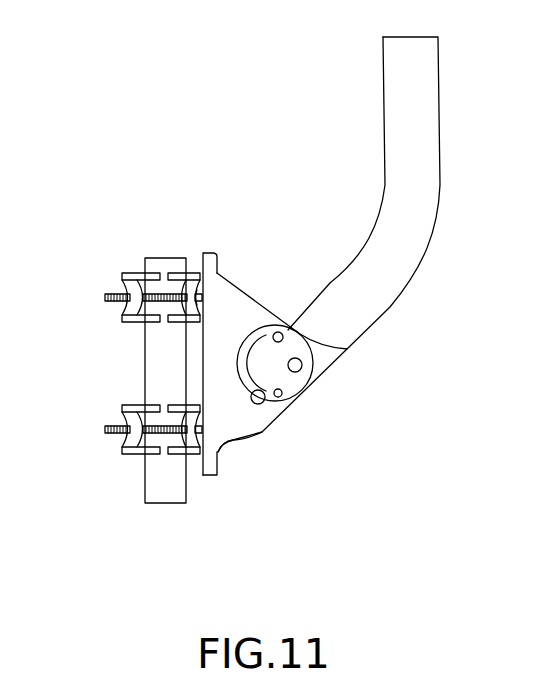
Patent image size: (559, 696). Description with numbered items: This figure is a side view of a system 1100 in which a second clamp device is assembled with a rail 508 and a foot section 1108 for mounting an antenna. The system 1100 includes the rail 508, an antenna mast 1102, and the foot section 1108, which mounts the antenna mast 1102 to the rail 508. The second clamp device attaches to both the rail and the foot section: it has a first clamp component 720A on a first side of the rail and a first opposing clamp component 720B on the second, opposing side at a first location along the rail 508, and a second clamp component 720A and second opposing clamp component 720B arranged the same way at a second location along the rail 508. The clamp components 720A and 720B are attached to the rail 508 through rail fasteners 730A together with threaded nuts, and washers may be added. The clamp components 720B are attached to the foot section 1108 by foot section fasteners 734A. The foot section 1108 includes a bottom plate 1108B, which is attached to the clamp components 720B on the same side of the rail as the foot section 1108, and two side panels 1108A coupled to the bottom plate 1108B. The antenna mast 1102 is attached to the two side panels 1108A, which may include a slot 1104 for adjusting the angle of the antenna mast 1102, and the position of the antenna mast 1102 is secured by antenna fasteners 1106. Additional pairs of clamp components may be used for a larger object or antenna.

The system 1100 is at (133, 114).
The antenna mast 1102 is at (430, 93).
The slot 1104 is at (345, 351).
The antenna fasteners 1106 is at (295, 410).
The foot section 1108 is at (282, 414).
The side panels 1108A is at (233, 437).
The bottom plate 1108B is at (216, 476).
The rail 508 is at (170, 258).
The clamp component 720A is at (127, 262).
The opposing clamp component 720B is at (198, 252).
The rail fasteners 730A is at (108, 305).
The foot section fasteners 734A is at (201, 303).